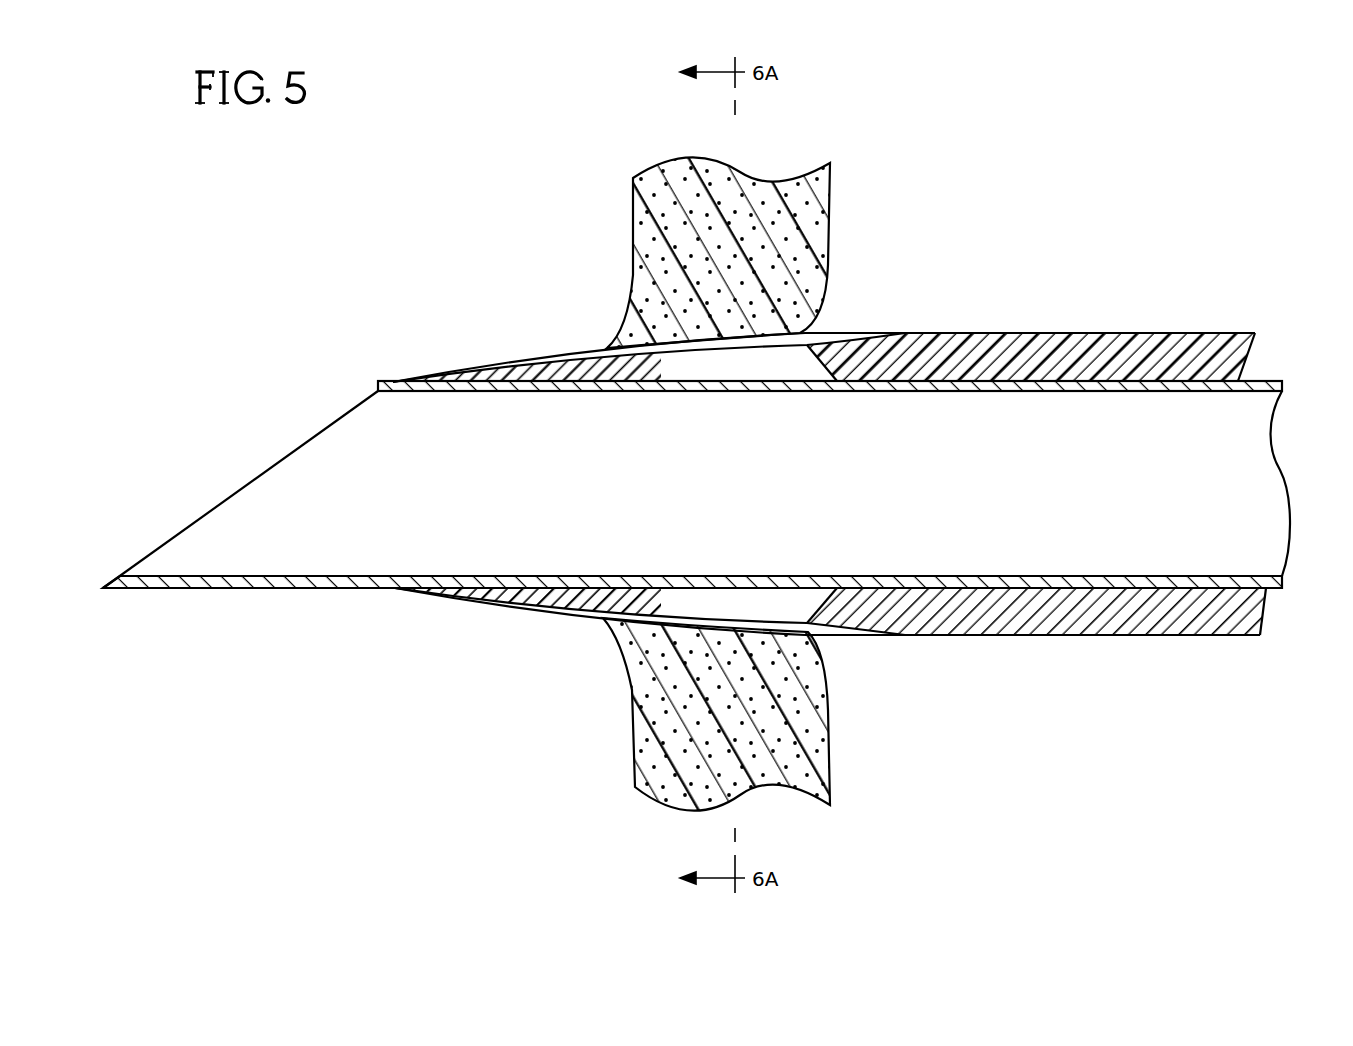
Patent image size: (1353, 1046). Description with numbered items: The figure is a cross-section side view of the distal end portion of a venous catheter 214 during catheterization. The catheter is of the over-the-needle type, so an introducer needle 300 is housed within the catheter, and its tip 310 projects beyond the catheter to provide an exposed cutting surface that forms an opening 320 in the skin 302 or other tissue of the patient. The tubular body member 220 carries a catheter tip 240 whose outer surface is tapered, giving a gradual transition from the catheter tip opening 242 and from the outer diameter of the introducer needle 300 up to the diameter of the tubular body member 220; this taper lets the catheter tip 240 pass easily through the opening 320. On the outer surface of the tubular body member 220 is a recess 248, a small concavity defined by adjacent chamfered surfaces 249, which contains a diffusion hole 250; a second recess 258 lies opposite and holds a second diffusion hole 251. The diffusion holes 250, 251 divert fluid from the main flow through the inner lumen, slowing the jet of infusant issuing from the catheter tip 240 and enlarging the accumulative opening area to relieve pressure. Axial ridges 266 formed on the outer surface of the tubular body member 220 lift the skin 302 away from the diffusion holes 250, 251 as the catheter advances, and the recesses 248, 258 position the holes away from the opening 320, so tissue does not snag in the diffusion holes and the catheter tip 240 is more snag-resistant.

The venous catheter 214 is at (804, 427).
The tubular body member 220 is at (1195, 333).
The catheter tip 240 is at (963, 636).
The catheter tip opening 242 is at (395, 380).
The recess 248 is at (672, 354).
The chamfered surfaces 249 is at (803, 338).
The diffusion hole 250 is at (773, 363).
The second diffusion hole 251 is at (764, 606).
The second recess 258 is at (703, 620).
The axial ridges 266 is at (867, 337).
The introducer needle 300 is at (270, 589).
The skin 302 is at (633, 257).
The tip of the introducer needle 310 is at (262, 473).
The opening 320 is at (601, 348).